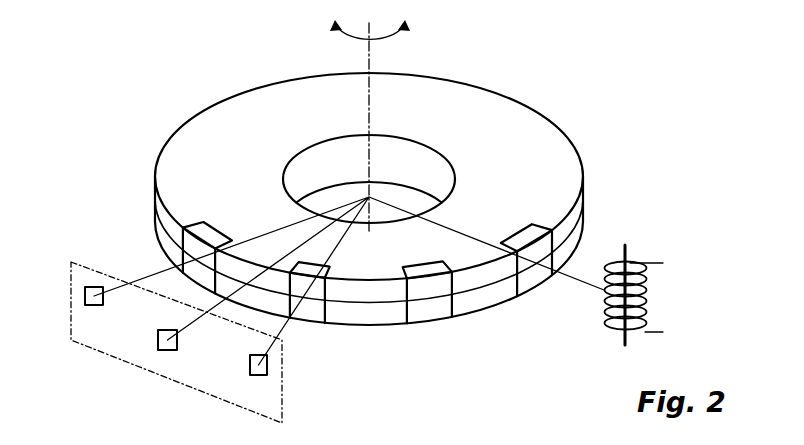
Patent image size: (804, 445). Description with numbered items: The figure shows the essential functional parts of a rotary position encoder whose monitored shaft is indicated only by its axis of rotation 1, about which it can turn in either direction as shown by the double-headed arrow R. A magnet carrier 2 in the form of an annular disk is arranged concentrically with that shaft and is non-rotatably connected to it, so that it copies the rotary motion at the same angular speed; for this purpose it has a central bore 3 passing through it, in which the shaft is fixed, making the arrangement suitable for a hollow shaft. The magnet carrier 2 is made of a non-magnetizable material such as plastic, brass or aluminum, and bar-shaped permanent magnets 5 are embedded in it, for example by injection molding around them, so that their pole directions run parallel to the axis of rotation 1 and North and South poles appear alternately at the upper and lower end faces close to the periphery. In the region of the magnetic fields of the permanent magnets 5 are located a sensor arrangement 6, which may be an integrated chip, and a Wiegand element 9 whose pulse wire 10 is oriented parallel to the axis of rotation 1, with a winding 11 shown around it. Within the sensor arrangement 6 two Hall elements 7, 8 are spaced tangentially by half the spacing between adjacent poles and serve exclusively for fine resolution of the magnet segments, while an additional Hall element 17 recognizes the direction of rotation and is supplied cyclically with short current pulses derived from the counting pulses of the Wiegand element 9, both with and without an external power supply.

The axis of rotation 1 is at (375, 109).
The magnet carrier 2 is at (524, 113).
The central bore 3 is at (307, 149).
The permanent magnets 5 is at (192, 227).
The sensor arrangement 6 is at (141, 383).
The Hall element 7 is at (84, 301).
The Hall element 8 is at (174, 351).
The Wiegand element 9 is at (643, 283).
The Wiegand or pulse wire 10 is at (627, 257).
The coil winding 11 is at (606, 320).
The Hall element 17 is at (262, 376).